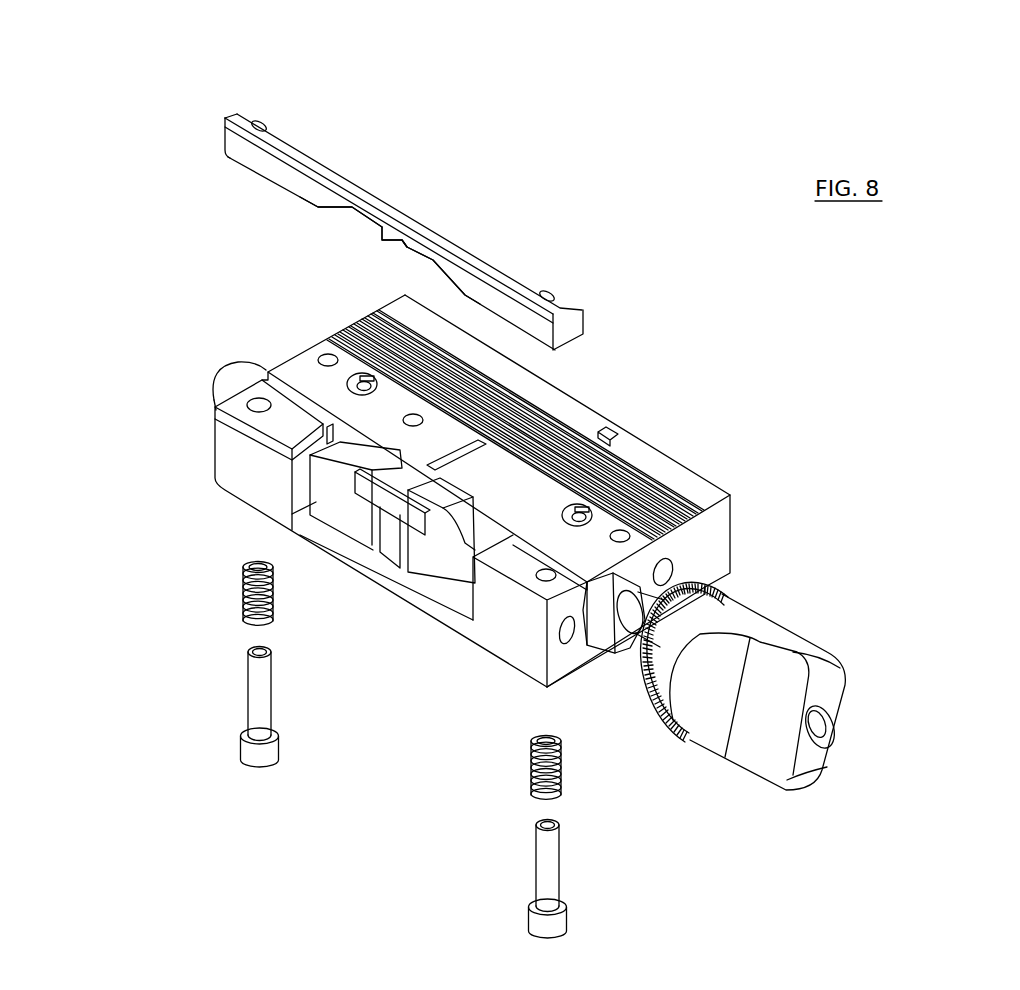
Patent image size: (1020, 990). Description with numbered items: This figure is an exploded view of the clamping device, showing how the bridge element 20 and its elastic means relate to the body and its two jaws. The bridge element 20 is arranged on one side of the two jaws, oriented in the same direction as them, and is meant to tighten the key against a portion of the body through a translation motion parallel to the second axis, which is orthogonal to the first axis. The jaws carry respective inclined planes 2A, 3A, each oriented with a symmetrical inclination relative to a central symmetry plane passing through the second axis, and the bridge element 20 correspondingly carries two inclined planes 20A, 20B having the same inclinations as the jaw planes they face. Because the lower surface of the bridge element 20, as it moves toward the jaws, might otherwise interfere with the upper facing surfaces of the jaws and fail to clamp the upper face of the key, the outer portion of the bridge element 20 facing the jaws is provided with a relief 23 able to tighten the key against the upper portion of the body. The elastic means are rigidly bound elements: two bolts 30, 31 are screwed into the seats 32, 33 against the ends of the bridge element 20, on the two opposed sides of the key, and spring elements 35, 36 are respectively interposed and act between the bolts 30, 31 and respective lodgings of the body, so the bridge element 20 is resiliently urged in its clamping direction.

The bridge element 20 is at (358, 205).
The inclined plane of bridge 20A is at (334, 207).
The inclined plane of bridge 20B is at (450, 273).
The relief 23 is at (387, 239).
The bolt seat 32 is at (253, 116).
The bolt seat 33 is at (552, 295).
The inclined plane of jaw 2A is at (340, 447).
The inclined plane of jaw 3A is at (470, 522).
The bolt 30 is at (258, 707).
The bolt 31 is at (548, 868).
The spring element 35 is at (250, 590).
The spring element 36 is at (532, 762).